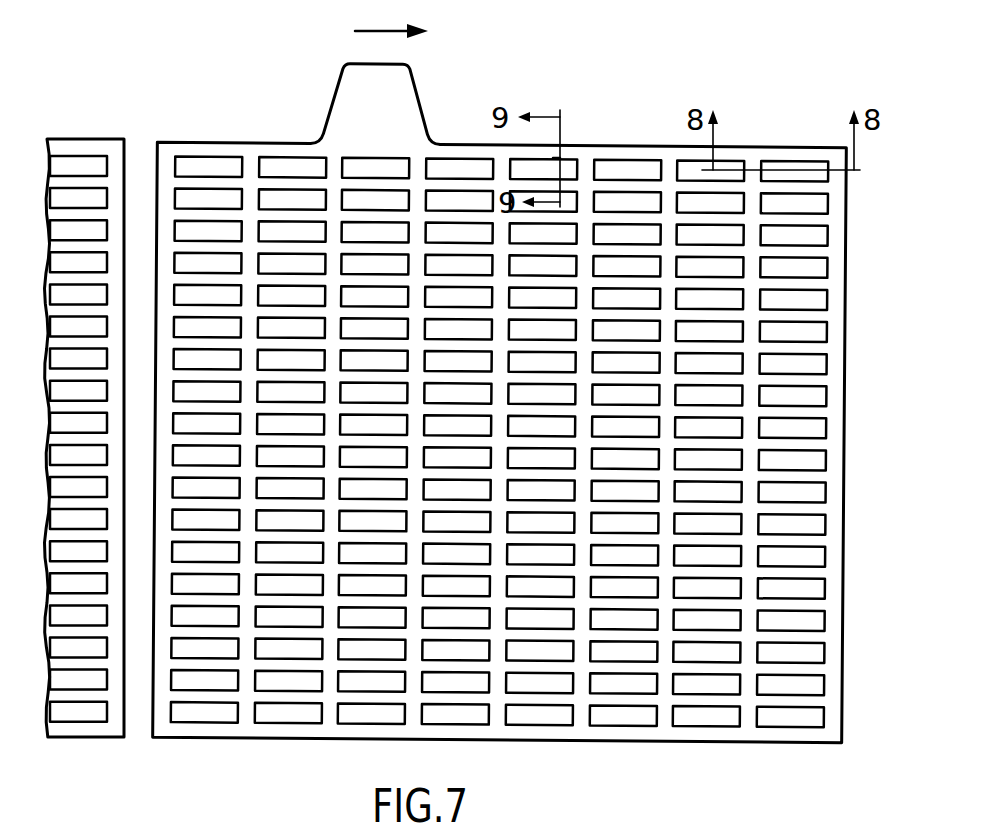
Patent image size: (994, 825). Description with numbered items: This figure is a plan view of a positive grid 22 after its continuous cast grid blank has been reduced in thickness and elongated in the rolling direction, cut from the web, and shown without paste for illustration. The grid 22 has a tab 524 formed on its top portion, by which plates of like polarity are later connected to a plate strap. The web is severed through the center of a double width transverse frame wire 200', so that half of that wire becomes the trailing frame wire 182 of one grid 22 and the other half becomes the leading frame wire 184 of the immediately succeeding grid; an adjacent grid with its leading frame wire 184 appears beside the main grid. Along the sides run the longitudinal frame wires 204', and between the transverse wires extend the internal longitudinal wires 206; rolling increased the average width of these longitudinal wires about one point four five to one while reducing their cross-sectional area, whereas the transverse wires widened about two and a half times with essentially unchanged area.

The grid 22 is at (69, 130).
The transverse frame wire 200' is at (484, 109).
The tab 524 is at (408, 103).
The longitudinal frame wire 204' is at (726, 151).
The trailing frame wire 182 is at (500, 421).
The leading frame wire 184 is at (118, 713).
The internal longitudinal wire 206 is at (727, 670).